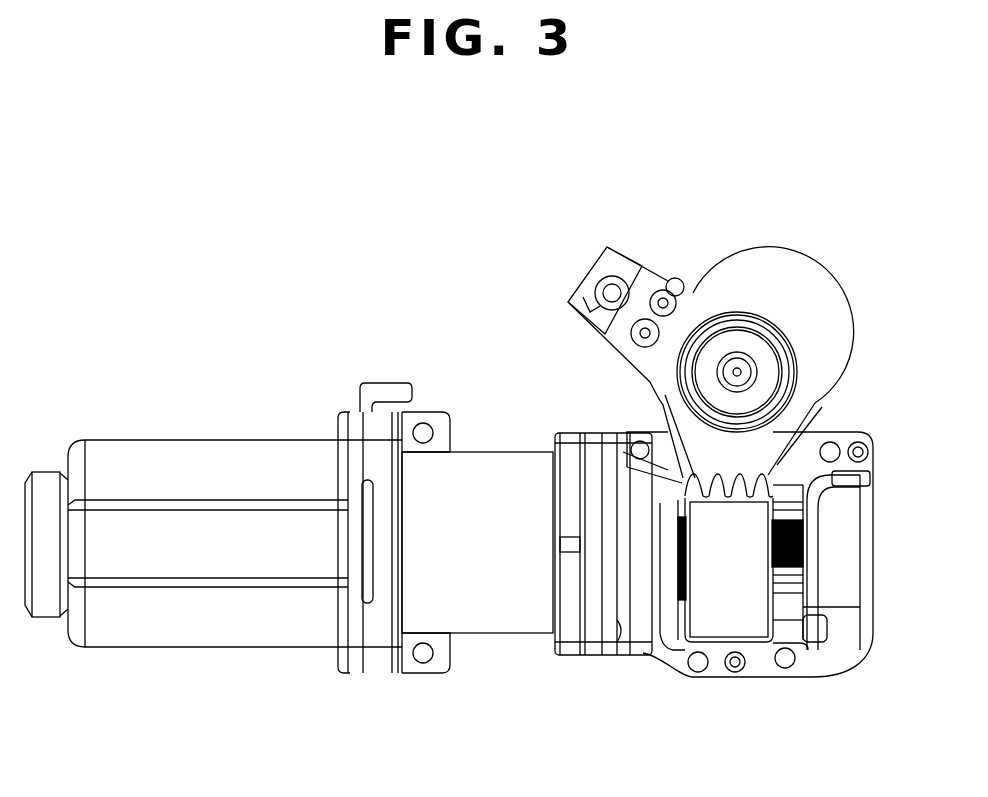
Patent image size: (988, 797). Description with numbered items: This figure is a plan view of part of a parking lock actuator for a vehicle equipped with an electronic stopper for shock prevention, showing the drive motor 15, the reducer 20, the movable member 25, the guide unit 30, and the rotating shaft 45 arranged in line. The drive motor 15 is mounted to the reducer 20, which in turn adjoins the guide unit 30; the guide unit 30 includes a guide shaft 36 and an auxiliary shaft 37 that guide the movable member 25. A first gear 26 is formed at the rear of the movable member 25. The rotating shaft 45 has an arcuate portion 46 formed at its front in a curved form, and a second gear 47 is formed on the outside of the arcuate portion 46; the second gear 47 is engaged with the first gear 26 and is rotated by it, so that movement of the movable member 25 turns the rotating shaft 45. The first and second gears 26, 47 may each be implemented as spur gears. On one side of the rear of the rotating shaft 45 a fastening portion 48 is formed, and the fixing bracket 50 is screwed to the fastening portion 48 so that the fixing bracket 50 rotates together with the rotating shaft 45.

The drive motor 15 is at (208, 636).
The reducer 20 is at (504, 623).
The movable member 25 is at (733, 617).
The first gear 26 is at (857, 498).
The guide unit 30 is at (640, 657).
The guide shaft 36 is at (803, 535).
The auxiliary shaft 37 is at (797, 602).
The rotating shaft 45 is at (808, 343).
The arcuate portion 46 is at (812, 410).
The second gear 47 is at (805, 433).
The fastening portion 48 is at (690, 287).
The fixing bracket 50 is at (650, 265).